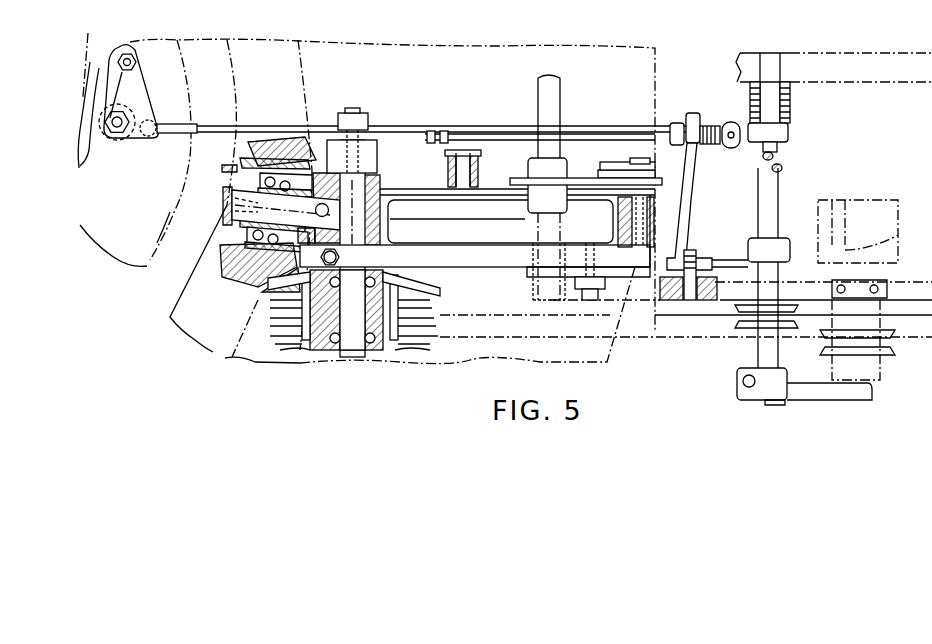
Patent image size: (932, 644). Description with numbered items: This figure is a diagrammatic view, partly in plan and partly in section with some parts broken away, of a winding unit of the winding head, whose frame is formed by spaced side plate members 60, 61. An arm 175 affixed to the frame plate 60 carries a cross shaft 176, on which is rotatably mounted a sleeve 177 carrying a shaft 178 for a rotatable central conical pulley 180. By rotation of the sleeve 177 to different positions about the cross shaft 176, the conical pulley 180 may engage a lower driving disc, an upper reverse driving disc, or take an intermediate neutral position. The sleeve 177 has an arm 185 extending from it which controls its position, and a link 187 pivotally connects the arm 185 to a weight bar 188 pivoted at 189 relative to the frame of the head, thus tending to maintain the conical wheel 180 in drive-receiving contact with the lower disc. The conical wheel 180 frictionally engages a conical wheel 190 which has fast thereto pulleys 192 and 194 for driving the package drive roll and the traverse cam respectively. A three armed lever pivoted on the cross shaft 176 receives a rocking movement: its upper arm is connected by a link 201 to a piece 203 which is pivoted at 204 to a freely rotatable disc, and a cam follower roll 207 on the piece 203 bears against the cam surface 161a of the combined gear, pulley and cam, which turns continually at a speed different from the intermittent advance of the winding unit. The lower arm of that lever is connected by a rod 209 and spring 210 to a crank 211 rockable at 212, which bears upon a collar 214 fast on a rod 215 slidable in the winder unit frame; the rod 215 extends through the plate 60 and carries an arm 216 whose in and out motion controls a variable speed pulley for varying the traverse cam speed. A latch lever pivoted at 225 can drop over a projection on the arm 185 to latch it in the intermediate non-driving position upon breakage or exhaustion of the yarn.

The cam surface 161a is at (96, 93).
The pivot 204 is at (128, 56).
The piece 203 is at (150, 90).
The link 201 is at (184, 126).
The cam follower roll 207 is at (117, 140).
The shaft 178 is at (224, 236).
The conical pulley 180 is at (257, 278).
The conical wheel 190 is at (268, 298).
The cross shaft 176 is at (348, 350).
The pulley 194 is at (446, 342).
The pulley 192 is at (446, 321).
The sleeve 177 is at (378, 177).
The arm 185 is at (407, 188).
The weight bar 188 is at (500, 221).
The arm 175 is at (463, 267).
The pivot 225 is at (532, 147).
The rod 209 is at (592, 128).
The pivot 189 is at (592, 232).
The side plate member 60 is at (667, 302).
The link 187 is at (685, 192).
The spring 210 is at (709, 146).
The crank 211 is at (740, 262).
The pivot 212 is at (691, 262).
The collar 214 is at (778, 260).
The rod 215 is at (774, 170).
The side plate member 61 is at (756, 52).
The arm 216 is at (814, 394).